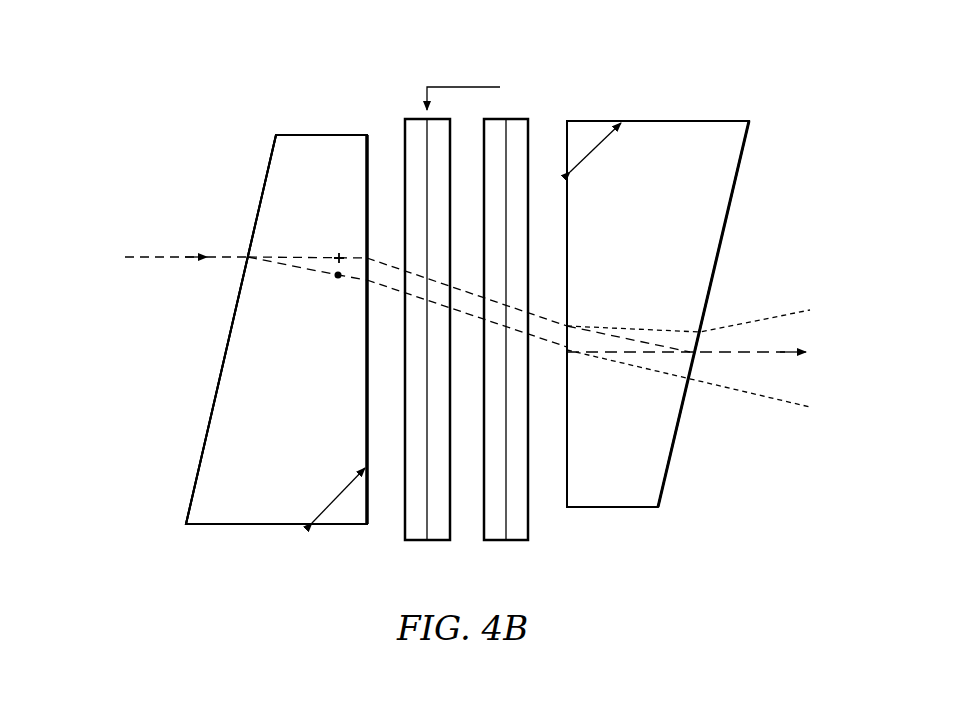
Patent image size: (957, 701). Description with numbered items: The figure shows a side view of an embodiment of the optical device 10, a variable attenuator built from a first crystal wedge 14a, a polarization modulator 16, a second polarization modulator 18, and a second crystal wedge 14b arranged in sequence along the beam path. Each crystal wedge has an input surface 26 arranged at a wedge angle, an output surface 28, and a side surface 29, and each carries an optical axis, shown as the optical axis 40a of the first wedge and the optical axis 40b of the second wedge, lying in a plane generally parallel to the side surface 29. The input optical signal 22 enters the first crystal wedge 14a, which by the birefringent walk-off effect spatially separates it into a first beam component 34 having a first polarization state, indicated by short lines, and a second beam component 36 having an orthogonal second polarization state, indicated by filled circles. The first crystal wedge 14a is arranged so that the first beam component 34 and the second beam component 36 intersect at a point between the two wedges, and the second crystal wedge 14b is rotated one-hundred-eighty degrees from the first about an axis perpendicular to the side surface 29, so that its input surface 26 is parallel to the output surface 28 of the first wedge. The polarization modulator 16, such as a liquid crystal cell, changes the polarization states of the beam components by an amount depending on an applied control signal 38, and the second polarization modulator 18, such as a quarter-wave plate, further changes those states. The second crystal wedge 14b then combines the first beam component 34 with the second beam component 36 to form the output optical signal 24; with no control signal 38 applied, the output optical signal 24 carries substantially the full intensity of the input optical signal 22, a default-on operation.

The optical device 10 is at (215, 155).
The first crystal wedge 14a is at (276, 525).
The second crystal wedge 14b is at (610, 508).
The polarization modulator 16 is at (415, 541).
The second polarization modulator 18 is at (517, 541).
The input optical signal 22 is at (166, 255).
The output optical signal 24 is at (767, 354).
The input surface 26 is at (198, 452).
The output surface 28 is at (369, 492).
The side surface 29 is at (311, 380).
The first beam component 34 is at (314, 255).
The second beam component 36 is at (320, 272).
The control signal 38 is at (466, 86).
The optical axis of first crystal wedge 40a is at (336, 496).
The optical axis of second crystal wedge 40b is at (594, 150).